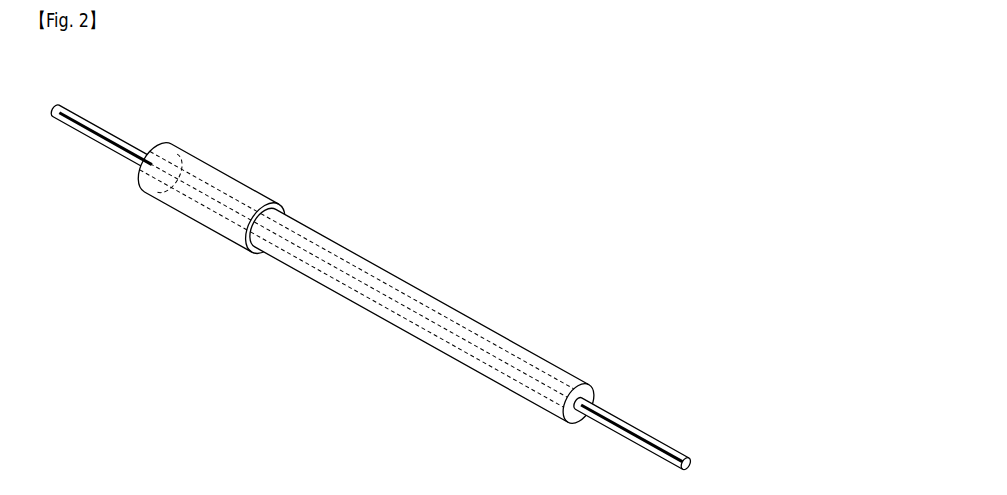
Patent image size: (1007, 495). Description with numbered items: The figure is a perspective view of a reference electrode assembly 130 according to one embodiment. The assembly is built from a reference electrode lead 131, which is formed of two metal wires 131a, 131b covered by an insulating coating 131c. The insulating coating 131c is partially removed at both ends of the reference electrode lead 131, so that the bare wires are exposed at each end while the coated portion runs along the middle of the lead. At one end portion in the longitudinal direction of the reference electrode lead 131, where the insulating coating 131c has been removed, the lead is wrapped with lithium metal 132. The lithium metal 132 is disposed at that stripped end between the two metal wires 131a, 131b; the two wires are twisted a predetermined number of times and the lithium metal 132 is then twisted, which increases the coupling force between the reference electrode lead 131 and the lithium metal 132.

The reference electrode assembly 130 is at (453, 240).
The reference electrode lead 131 is at (811, 414).
The metal wire 131a is at (623, 420).
The metal wire 131b is at (675, 448).
The insulating coating 131c is at (571, 380).
The lithium metal 132 is at (230, 232).